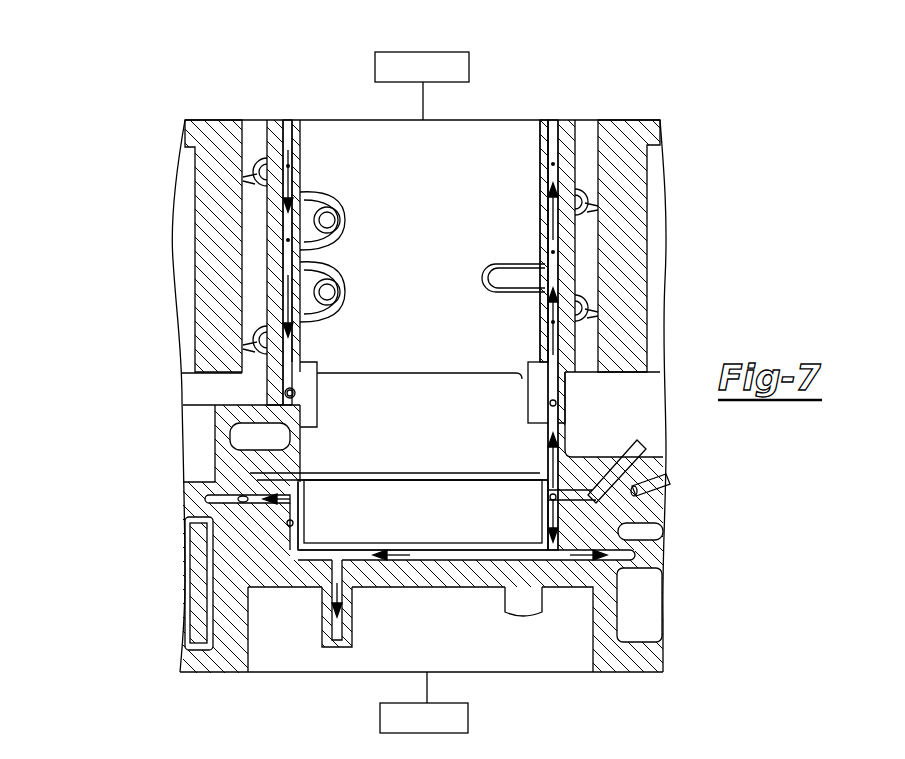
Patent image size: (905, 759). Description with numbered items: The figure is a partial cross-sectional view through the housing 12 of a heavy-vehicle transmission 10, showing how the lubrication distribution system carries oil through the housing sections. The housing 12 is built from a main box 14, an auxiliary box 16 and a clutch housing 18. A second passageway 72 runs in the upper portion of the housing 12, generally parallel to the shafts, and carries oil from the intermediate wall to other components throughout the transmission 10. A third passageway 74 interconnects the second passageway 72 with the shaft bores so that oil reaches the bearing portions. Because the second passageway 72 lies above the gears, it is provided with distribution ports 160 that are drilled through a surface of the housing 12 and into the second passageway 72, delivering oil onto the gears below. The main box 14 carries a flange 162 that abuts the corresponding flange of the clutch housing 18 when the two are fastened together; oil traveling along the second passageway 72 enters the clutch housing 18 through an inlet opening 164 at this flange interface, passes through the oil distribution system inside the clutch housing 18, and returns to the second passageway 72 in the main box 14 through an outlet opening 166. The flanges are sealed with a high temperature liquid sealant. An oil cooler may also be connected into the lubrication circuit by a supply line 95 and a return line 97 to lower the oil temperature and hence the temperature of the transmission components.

The transmission 10 is at (524, 50).
The housing 12 is at (565, 70).
The main box 14 is at (130, 135).
The auxiliary box 16 is at (380, 716).
The clutch housing 18 is at (470, 67).
The second passageway 72 is at (303, 371).
The third passageway 74 is at (548, 510).
The supply line 95 is at (669, 485).
The return line 97 is at (632, 432).
The distribution port 160 is at (315, 247).
The flange 162 is at (633, 119).
The inlet opening 164 is at (550, 119).
The outlet opening 166 is at (285, 110).